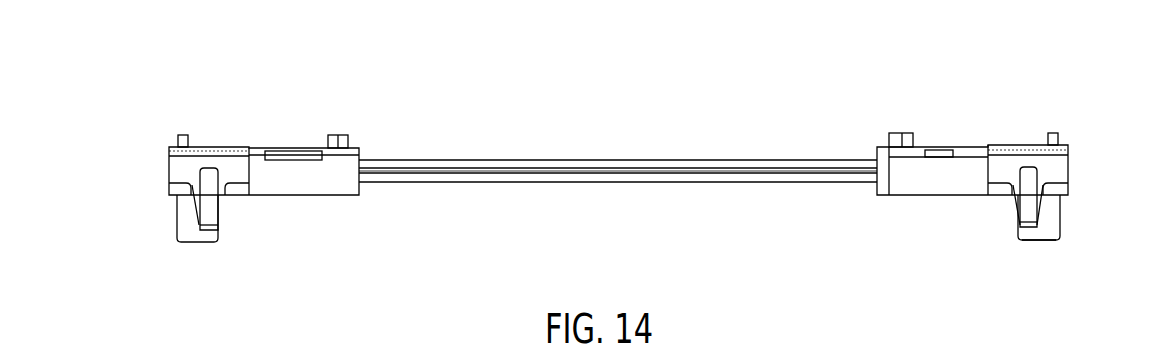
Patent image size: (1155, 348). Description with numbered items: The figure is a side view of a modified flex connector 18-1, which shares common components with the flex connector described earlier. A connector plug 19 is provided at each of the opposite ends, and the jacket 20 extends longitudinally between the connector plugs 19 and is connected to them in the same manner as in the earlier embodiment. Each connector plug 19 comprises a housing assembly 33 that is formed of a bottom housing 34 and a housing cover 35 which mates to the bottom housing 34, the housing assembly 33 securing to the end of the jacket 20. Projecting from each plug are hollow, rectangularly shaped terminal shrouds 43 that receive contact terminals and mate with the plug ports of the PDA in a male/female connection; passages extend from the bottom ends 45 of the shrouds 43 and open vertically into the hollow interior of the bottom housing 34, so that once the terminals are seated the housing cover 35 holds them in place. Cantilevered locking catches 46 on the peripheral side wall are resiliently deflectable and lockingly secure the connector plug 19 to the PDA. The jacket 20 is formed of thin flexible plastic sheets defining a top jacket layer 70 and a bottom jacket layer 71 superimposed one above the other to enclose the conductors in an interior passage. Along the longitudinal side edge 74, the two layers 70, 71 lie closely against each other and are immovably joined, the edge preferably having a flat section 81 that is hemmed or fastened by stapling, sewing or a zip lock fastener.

The modified flex connector 18-1 is at (643, 197).
The connector plug 19 is at (605, 159).
The jacket 20 is at (493, 168).
The housing assembly 33 is at (332, 192).
The bottom housing 34 is at (293, 184).
The housing cover 35 is at (222, 147).
The terminal shroud 43 is at (188, 228).
The bottom end 45 is at (1048, 238).
The locking catch 46 is at (215, 210).
The top jacket layer 70 is at (583, 160).
The bottom jacket layer 71 is at (643, 182).
The side edge 74 is at (730, 170).
The flat section 81 is at (408, 168).